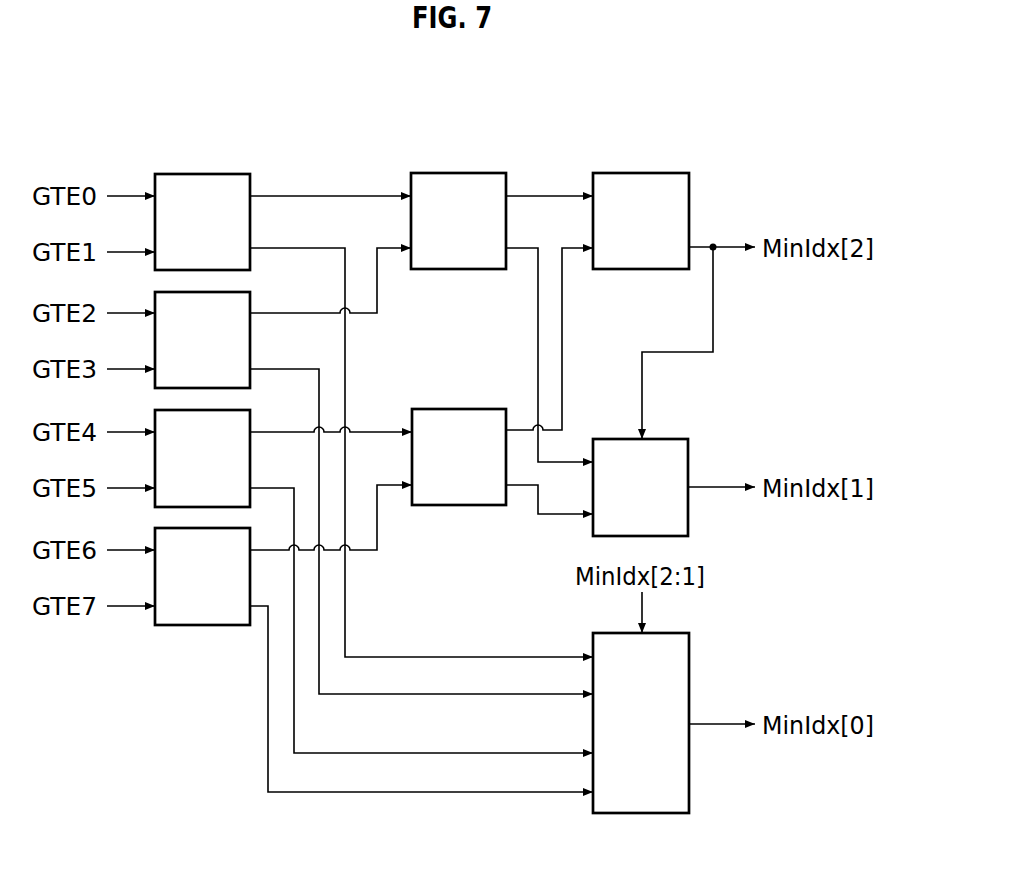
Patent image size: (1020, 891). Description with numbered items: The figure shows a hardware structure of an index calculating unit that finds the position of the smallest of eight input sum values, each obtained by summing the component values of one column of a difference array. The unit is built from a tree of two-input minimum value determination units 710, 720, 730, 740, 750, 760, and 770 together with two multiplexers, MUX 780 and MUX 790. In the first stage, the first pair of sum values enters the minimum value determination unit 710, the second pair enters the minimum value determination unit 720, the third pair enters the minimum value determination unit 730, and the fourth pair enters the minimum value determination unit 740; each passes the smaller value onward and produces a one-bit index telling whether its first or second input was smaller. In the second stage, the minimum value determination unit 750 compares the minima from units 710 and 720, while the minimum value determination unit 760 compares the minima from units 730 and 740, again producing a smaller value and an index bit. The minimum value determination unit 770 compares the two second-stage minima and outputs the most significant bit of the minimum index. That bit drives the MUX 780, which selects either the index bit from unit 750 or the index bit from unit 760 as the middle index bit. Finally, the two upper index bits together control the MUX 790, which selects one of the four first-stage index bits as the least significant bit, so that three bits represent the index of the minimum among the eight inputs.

The minimum value determination unit 710 is at (203, 174).
The minimum value determination unit 720 is at (223, 293).
The minimum value determination unit 730 is at (223, 410).
The minimum value determination unit 740 is at (205, 625).
The minimum value determination unit 750 is at (458, 173).
The minimum value determination unit 760 is at (458, 409).
The minimum value determination unit 770 is at (641, 173).
The MUX 780 is at (677, 439).
The MUX 790 is at (689, 660).